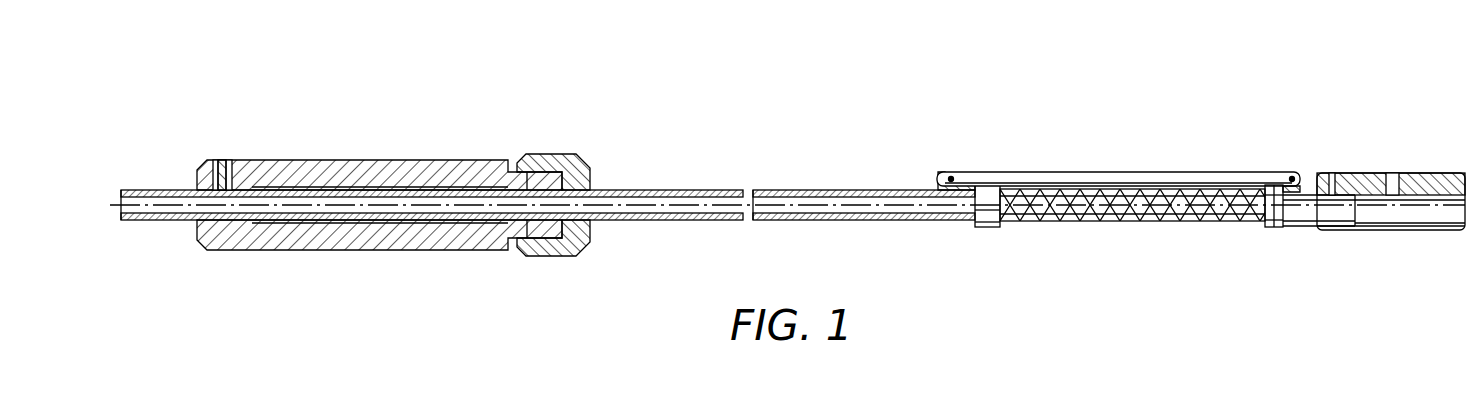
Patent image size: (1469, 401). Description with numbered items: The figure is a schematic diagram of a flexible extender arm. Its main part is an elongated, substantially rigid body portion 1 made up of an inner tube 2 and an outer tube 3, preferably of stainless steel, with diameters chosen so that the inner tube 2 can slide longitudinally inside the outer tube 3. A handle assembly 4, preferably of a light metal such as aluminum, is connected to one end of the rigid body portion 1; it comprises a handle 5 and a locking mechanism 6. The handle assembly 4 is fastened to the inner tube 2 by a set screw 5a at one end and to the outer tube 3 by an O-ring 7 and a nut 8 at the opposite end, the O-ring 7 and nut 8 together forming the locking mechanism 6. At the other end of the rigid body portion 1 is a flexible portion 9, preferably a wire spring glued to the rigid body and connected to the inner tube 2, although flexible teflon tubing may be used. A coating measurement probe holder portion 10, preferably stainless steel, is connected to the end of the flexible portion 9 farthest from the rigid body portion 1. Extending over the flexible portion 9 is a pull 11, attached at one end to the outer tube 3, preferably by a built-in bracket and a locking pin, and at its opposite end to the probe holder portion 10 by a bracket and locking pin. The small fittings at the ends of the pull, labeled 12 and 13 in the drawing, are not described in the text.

The substantially rigid body portion 1 is at (855, 152).
The inner tube 2 is at (138, 189).
The outer tube 3 is at (779, 189).
The handle assembly 4 is at (379, 138).
The handle 5 is at (360, 168).
The set screw 5a is at (221, 160).
The locking mechanism 6 is at (539, 139).
The O-ring 7 is at (573, 160).
The nut 8 is at (539, 156).
The flexible portion 9 is at (1163, 190).
The coating measurement probe holder portion 10 is at (1425, 173).
The pull 11 is at (1070, 172).
The left clip 12 is at (941, 170).
The right clip 13 is at (1306, 177).